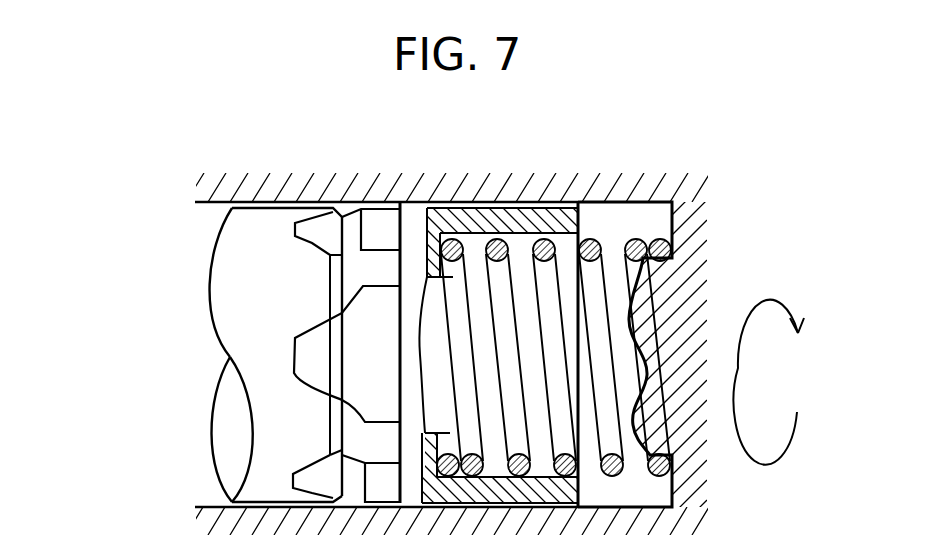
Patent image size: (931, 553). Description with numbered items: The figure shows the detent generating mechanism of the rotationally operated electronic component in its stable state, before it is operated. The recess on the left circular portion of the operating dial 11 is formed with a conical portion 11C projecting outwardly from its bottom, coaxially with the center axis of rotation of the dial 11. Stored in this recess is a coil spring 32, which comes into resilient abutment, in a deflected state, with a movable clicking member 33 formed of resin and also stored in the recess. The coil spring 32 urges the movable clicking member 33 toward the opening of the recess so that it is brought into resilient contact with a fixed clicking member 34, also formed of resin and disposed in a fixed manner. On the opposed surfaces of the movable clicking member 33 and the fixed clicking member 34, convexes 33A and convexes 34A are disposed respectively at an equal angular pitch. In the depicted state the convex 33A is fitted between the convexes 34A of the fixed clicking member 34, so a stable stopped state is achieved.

The conical portion 11C is at (660, 287).
The operating dial 11 is at (528, 276).
The convex 34A is at (307, 283).
The fixed clicking member 34 is at (184, 355).
The convex 33A is at (360, 342).
The movable clicking member 33 is at (510, 220).
The coil spring 32 is at (587, 240).